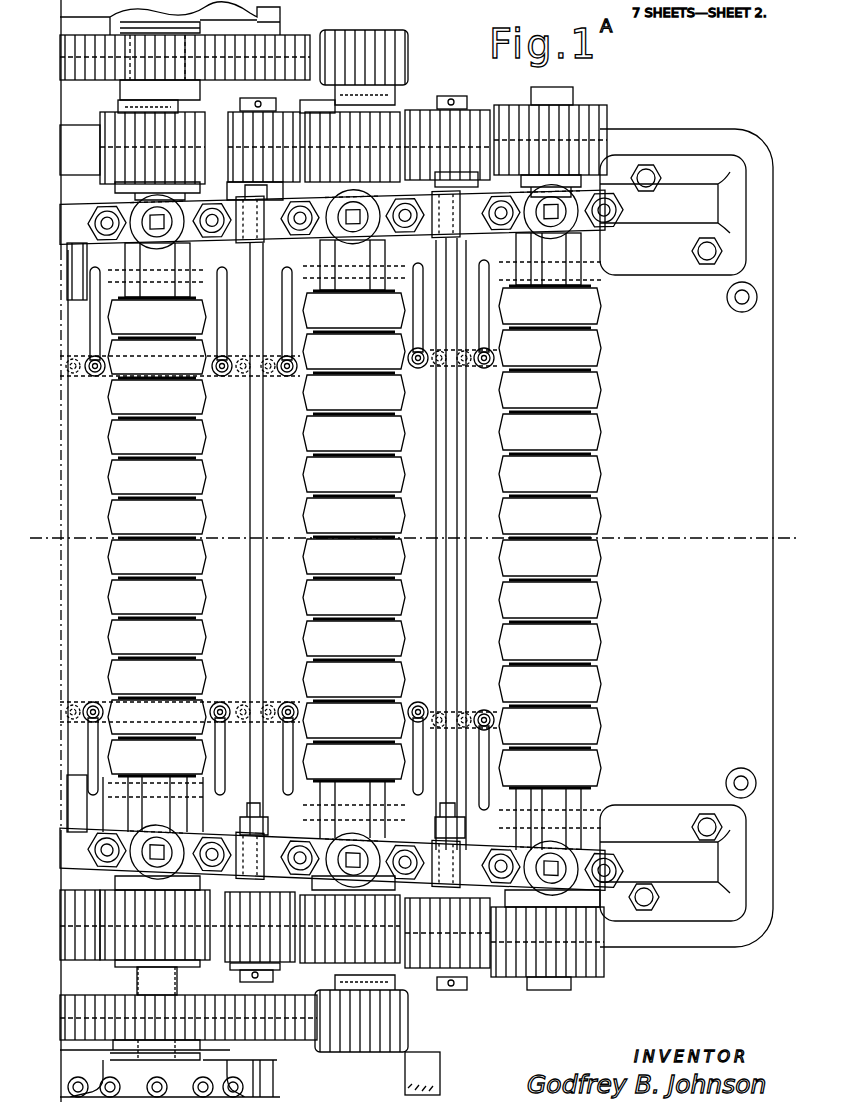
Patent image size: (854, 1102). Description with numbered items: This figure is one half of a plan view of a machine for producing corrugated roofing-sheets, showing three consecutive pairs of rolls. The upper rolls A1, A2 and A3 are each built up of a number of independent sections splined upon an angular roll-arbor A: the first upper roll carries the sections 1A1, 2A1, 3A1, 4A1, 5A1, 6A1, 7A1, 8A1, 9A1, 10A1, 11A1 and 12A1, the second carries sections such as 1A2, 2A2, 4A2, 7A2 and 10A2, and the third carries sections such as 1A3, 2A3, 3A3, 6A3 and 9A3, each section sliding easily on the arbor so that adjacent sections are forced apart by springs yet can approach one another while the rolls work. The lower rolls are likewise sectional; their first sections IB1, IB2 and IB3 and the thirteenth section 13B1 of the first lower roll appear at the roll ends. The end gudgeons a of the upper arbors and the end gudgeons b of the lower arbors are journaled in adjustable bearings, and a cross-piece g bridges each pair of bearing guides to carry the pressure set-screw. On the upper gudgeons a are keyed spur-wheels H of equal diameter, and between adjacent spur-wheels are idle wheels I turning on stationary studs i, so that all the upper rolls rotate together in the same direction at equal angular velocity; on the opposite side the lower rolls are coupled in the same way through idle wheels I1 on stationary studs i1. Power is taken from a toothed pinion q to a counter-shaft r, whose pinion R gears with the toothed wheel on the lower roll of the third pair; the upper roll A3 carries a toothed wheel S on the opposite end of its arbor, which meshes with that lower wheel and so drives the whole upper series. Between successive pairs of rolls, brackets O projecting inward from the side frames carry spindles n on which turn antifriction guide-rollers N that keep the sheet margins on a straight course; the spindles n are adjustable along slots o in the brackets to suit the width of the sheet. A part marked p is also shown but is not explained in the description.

The toothed pinion q is at (408, 52).
The counter-shaft r is at (117, 980).
The pinion R is at (238, 979).
The stationary stud i is at (258, 98).
The stationary stud i1 is at (455, 990).
The idle wheel I is at (98, 122).
The idle wheel I1 is at (440, 970).
The spur-wheel H is at (512, 104).
The end gudgeon a is at (573, 90).
The end gudgeon b is at (527, 985).
The cross-piece g is at (627, 218).
The roll-arbor A is at (345, 256).
The bracket O is at (100, 263).
The lower roll-section IB3 is at (165, 270).
The lower roll-section IB2 is at (360, 265).
The lower roll-section IB1 is at (564, 259).
The lower roll-section 13B1 is at (581, 800).
The toothed wheel S is at (154, 804).
The slot o is at (100, 320).
The spindle n is at (250, 372).
The antifriction guide-roller N is at (460, 368).
The upper roll A3 is at (144, 537).
The upper roll A2 is at (340, 536).
The upper roll A1 is at (536, 537).
The shaft end p is at (440, 1072).
The upper roll-section 1A3 is at (157, 317).
The upper roll-section 2A3 is at (157, 357).
The upper roll-section 3A3 is at (157, 397).
The upper roll-section 6A3 is at (157, 517).
The upper roll-section 9A3 is at (157, 637).
The upper roll-section 1A2 is at (354, 310).
The upper roll-section 2A2 is at (354, 351).
The upper roll-section 4A2 is at (354, 433).
The upper roll-section 7A2 is at (354, 556).
The upper roll-section 10A2 is at (354, 679).
The upper roll-section 1A1 is at (550, 306).
The upper roll-section 2A1 is at (550, 348).
The upper roll-section 3A1 is at (550, 390).
The upper roll-section 4A1 is at (550, 432).
The upper roll-section 5A1 is at (550, 474).
The upper roll-section 6A1 is at (550, 516).
The upper roll-section 7A1 is at (550, 558).
The upper roll-section 8A1 is at (550, 600).
The upper roll-section 9A1 is at (550, 642).
The upper roll-section 10A1 is at (550, 684).
The upper roll-section 11A1 is at (550, 726).
The upper roll-section 12A1 is at (550, 768).